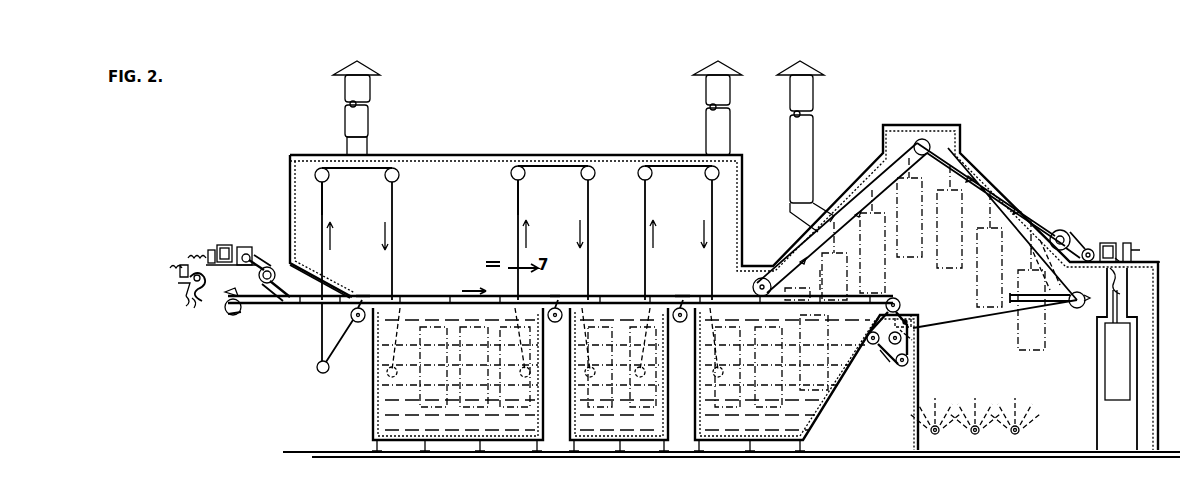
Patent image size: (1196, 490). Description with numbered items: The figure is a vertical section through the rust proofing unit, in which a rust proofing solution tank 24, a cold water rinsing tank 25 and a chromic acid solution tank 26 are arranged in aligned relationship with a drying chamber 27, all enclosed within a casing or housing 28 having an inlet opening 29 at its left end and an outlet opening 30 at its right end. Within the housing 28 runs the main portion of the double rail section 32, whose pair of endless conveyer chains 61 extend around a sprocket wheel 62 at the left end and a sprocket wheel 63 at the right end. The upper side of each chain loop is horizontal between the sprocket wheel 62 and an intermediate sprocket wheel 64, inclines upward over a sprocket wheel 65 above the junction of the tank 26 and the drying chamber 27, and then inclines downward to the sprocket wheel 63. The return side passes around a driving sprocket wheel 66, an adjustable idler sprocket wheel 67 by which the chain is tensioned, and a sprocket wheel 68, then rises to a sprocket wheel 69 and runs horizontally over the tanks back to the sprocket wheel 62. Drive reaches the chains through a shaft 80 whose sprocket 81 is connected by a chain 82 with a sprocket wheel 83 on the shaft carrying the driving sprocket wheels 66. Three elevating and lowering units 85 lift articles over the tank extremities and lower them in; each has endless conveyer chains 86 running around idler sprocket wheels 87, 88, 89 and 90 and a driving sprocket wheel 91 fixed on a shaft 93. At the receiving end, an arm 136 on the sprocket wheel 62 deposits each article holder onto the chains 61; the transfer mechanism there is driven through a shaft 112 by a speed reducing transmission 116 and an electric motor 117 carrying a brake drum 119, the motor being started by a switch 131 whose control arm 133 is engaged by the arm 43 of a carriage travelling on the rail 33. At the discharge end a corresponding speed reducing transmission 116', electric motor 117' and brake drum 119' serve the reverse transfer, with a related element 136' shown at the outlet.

The rust proofing solution tank 24 is at (372, 410).
The cold water rinsing tank 25 is at (604, 438).
The chromic acid solution tank 26 is at (766, 438).
The drying chamber 27 is at (1075, 442).
The casing or housing 28 is at (601, 153).
The inlet opening 29 is at (286, 257).
The outlet opening 30 is at (1132, 313).
The double rail section 32 is at (477, 298).
The continuous rail 33 is at (204, 273).
The outwardly extending arm 43 is at (186, 300).
The endless conveyer chains 61 is at (414, 296).
The sprocket wheel 62 is at (236, 320).
The sprocket wheel 63 is at (1082, 307).
The intermediate sprocket wheel 64 is at (766, 276).
The sprocket wheel 65 is at (926, 140).
The driving sprocket wheel 66 is at (909, 339).
The adjustable idler sprocket wheel 67 is at (909, 362).
The sprocket wheel 68 is at (873, 352).
The sprocket wheel 69 is at (901, 305).
The shaft 80 is at (923, 320).
The sprocket 81 is at (920, 310).
The chain 82 is at (917, 333).
The sprocket wheel 83 is at (883, 364).
The elevating and lowering units 85 is at (363, 168).
The endless conveyer chains 86 is at (328, 178).
The idler sprocket wheel 87 is at (328, 167).
The idler sprocket wheel 88 is at (399, 172).
The lower idler sprocket wheel 89 is at (320, 372).
The lower idler sprocket wheel 90 is at (372, 380).
The driving sprocket wheel 91 is at (355, 326).
The shaft 93 is at (359, 297).
The shaft 112 is at (277, 277).
The speed reducing transmission 116 is at (253, 237).
The electric motor 117 is at (226, 235).
The brake drum 119 is at (213, 244).
The starting switch 131 is at (176, 264).
The control arm 133 is at (178, 284).
The arm 136 is at (212, 307).
The speed reducing transmission 116' is at (1120, 234).
The electric motor 117' is at (1124, 237).
The brake drum 119' is at (1147, 244).
The discharge roller 136' is at (1077, 259).